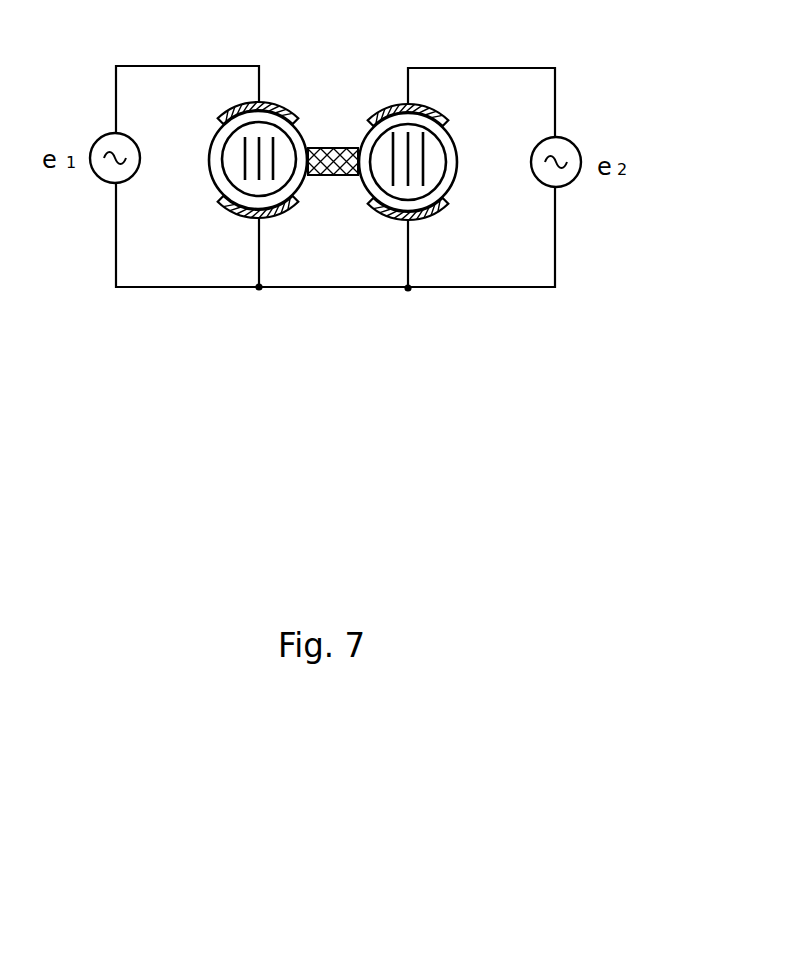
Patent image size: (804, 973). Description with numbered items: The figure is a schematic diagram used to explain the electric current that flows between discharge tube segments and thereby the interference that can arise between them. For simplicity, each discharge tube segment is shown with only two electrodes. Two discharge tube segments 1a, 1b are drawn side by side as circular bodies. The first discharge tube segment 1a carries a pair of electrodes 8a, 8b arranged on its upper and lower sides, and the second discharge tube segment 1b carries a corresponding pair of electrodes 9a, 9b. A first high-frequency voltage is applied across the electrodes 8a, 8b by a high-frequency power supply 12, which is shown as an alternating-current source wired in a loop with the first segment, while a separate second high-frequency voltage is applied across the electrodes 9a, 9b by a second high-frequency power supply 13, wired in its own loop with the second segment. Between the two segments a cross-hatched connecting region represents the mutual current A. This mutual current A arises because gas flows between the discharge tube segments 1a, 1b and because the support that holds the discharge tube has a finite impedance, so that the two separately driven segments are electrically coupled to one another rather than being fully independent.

The discharge tube segment 1a is at (193, 153).
The discharge tube segment 1b is at (455, 143).
The electrode 8a is at (284, 104).
The electrode 8b is at (273, 214).
The electrode 9a is at (433, 107).
The electrode 9b is at (430, 216).
The high-frequency power supply 12 is at (102, 137).
The high-frequency power supply 13 is at (575, 140).
The mutual current A is at (347, 146).